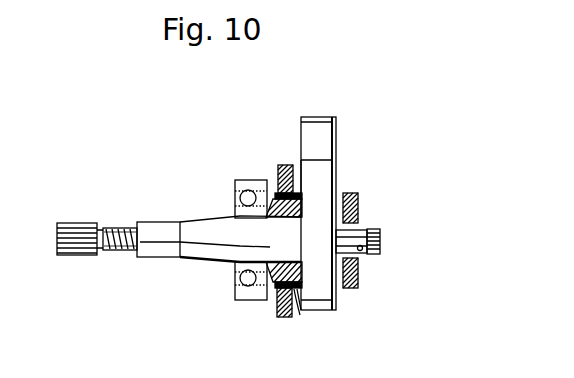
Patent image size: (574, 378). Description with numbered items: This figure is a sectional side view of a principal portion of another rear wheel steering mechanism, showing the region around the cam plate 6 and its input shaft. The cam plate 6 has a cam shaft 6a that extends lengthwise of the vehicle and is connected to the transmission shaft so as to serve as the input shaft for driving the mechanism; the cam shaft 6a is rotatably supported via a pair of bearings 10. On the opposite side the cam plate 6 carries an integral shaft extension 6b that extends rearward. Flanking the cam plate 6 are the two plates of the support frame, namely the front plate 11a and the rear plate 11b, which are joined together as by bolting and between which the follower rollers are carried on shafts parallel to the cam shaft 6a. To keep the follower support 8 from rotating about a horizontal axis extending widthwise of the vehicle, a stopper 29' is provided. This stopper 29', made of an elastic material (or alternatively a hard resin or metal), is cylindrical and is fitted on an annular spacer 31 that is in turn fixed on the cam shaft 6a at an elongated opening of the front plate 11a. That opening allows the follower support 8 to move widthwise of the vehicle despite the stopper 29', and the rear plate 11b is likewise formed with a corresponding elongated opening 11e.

The cam plate 6 is at (327, 148).
The cam shaft 6a is at (203, 243).
The shaft extension 6b is at (380, 237).
The follower support 8 is at (356, 180).
The bearings 10 is at (240, 179).
The front plate 11a is at (283, 164).
The rear plate 11b is at (360, 200).
The elongated opening 11e is at (361, 252).
The stopper 29' is at (290, 320).
The annular spacer 31 is at (268, 285).